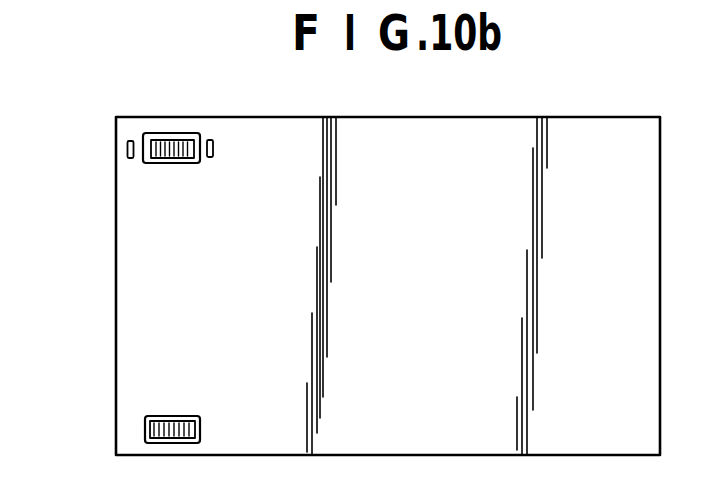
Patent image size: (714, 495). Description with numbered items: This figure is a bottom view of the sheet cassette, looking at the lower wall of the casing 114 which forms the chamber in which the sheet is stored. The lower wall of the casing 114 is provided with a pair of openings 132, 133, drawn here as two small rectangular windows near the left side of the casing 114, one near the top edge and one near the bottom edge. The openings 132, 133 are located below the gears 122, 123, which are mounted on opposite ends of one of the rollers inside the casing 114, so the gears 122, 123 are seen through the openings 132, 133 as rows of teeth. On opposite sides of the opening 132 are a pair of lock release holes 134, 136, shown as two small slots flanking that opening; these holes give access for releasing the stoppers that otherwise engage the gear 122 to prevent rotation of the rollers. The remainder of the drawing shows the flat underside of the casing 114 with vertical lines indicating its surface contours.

The casing 114 is at (137, 310).
The gear 122 is at (145, 162).
The gear 123 is at (175, 420).
The opening 132 is at (183, 165).
The opening 133 is at (201, 428).
The lock release hole 134 is at (127, 148).
The lock release hole 136 is at (214, 152).